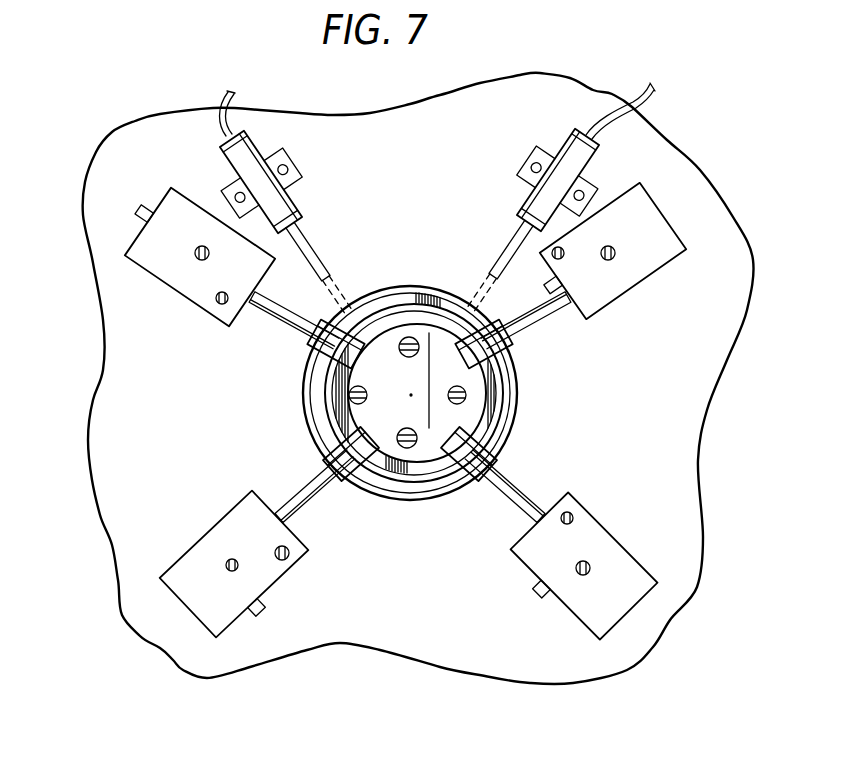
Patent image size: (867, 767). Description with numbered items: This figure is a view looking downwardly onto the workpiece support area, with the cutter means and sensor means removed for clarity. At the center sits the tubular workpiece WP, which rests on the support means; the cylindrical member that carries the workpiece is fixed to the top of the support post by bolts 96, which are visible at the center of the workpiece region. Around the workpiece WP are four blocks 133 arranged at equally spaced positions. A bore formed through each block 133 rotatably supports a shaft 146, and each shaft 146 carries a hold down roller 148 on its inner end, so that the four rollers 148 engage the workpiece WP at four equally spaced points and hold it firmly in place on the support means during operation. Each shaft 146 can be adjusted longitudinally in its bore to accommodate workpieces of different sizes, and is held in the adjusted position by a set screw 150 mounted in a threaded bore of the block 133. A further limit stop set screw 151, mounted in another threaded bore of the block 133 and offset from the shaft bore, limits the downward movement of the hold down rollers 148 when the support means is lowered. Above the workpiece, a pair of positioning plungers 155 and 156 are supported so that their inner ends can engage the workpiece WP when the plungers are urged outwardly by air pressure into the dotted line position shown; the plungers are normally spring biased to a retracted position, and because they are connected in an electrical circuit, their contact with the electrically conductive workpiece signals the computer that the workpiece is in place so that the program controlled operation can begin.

The bolts 96 is at (410, 358).
The tubular workpiece WP is at (497, 427).
The block 133 is at (134, 256).
The shaft 146 is at (262, 310).
The hold down roller 148 is at (312, 356).
The set screw 150 is at (202, 246).
The limit stop set screw 151 is at (216, 300).
The positioning plunger 155 is at (306, 242).
The positioning plunger 156 is at (504, 246).